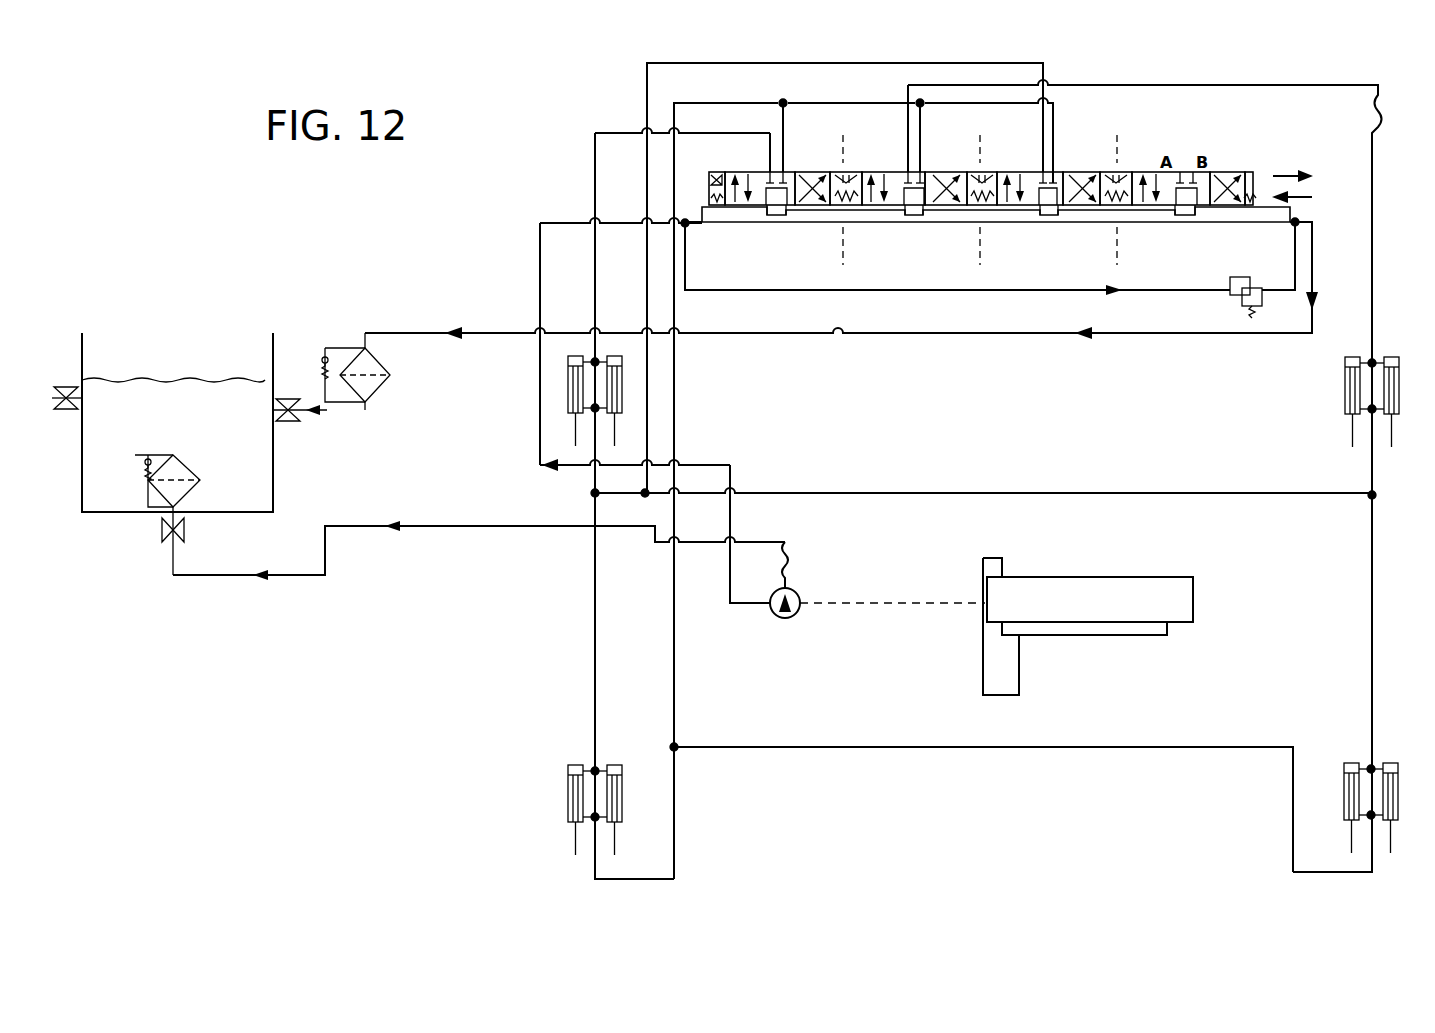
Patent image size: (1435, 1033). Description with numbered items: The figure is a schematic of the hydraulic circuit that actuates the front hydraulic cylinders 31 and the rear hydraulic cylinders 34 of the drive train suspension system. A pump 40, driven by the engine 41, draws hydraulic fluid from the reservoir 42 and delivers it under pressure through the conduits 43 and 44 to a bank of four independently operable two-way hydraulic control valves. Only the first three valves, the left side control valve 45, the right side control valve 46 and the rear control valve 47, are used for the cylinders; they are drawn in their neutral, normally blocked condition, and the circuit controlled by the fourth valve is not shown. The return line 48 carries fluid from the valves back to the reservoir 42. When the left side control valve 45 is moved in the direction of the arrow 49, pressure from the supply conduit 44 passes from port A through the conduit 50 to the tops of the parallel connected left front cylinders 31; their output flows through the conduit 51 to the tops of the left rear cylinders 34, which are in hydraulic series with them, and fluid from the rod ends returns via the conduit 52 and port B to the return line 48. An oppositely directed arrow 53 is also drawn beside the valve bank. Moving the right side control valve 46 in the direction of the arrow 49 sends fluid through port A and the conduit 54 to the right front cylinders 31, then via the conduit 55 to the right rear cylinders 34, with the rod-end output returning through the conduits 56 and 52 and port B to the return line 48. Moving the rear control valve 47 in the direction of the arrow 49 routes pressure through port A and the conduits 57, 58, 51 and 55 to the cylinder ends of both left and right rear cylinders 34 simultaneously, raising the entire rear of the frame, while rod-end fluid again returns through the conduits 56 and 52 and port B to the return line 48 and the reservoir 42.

The front hydraulic cylinders 31 is at (610, 410).
The rear hydraulic cylinders 34 is at (580, 820).
The pump 40 is at (785, 618).
The engine 41 is at (1047, 577).
The reservoir 42 is at (273, 470).
The conduit 43 is at (455, 528).
The supply conduit 44 is at (567, 222).
The left side control valve 45 is at (793, 150).
The right side control valve 46 is at (928, 150).
The rear control valve 47 is at (1063, 150).
The return line 48 is at (1313, 292).
The arrow 49 is at (1290, 170).
The conduit 50 is at (612, 133).
The conduit 51 is at (592, 660).
The conduit 52 is at (782, 100).
The valve return line 53 is at (1303, 200).
The conduit 54 is at (1222, 85).
The conduit 55 is at (1372, 660).
The conduit 56 is at (1000, 748).
The conduit 57 is at (965, 63).
The conduit 58 is at (930, 493).